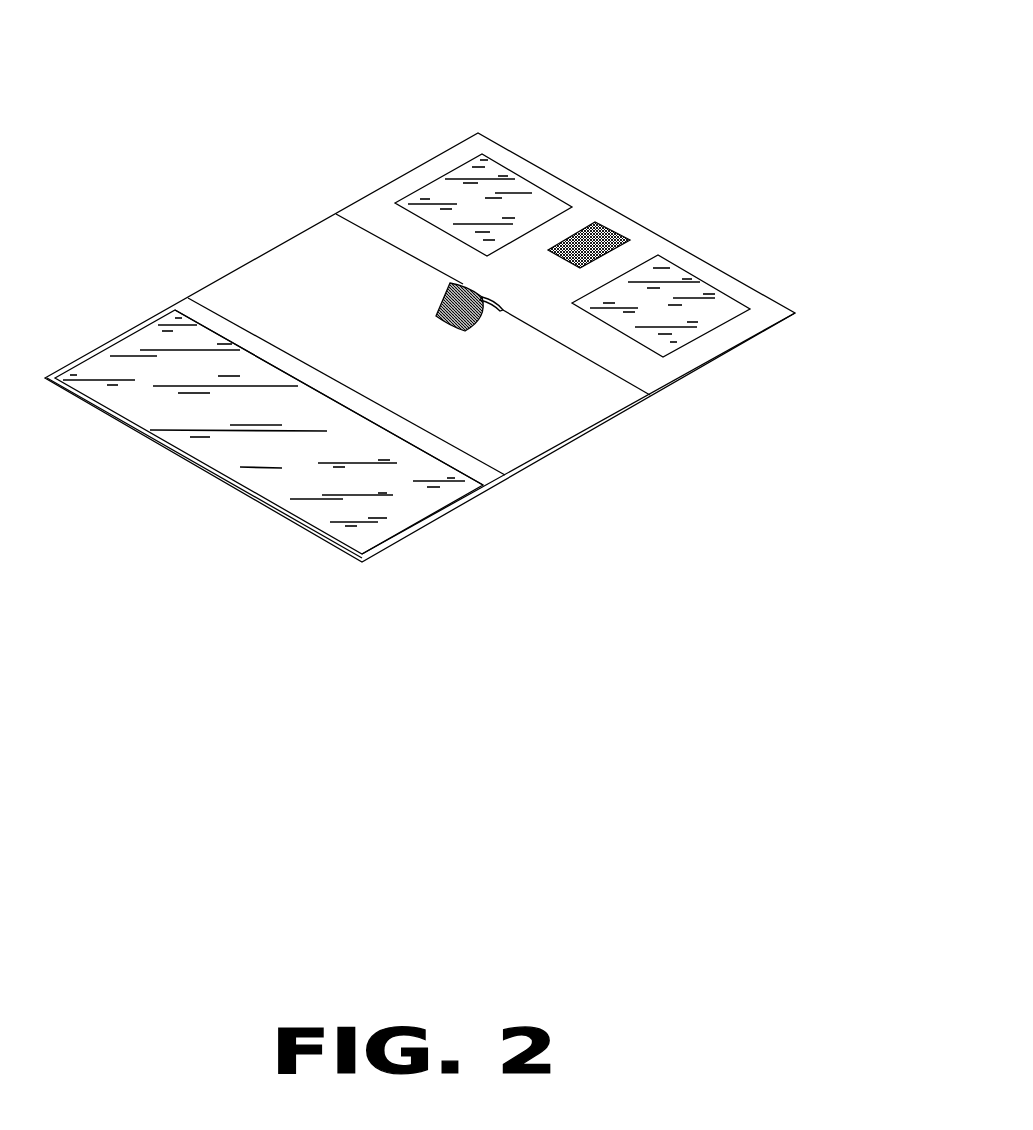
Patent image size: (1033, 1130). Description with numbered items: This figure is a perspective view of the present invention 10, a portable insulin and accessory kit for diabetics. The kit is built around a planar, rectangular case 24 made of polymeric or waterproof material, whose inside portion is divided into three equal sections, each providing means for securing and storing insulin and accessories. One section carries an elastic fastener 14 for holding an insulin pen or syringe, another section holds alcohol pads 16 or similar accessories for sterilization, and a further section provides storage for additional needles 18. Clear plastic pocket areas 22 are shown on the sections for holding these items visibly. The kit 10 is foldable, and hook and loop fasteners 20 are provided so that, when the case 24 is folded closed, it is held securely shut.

The present invention 10 is at (700, 110).
The elastic fastener 14 is at (446, 290).
The alcohol pads 16 is at (620, 290).
The storage for additional needles 18 is at (268, 442).
The hook and loop fasteners 20 is at (610, 227).
The clear plastic pocket 22 is at (690, 335).
The case 24 is at (493, 486).